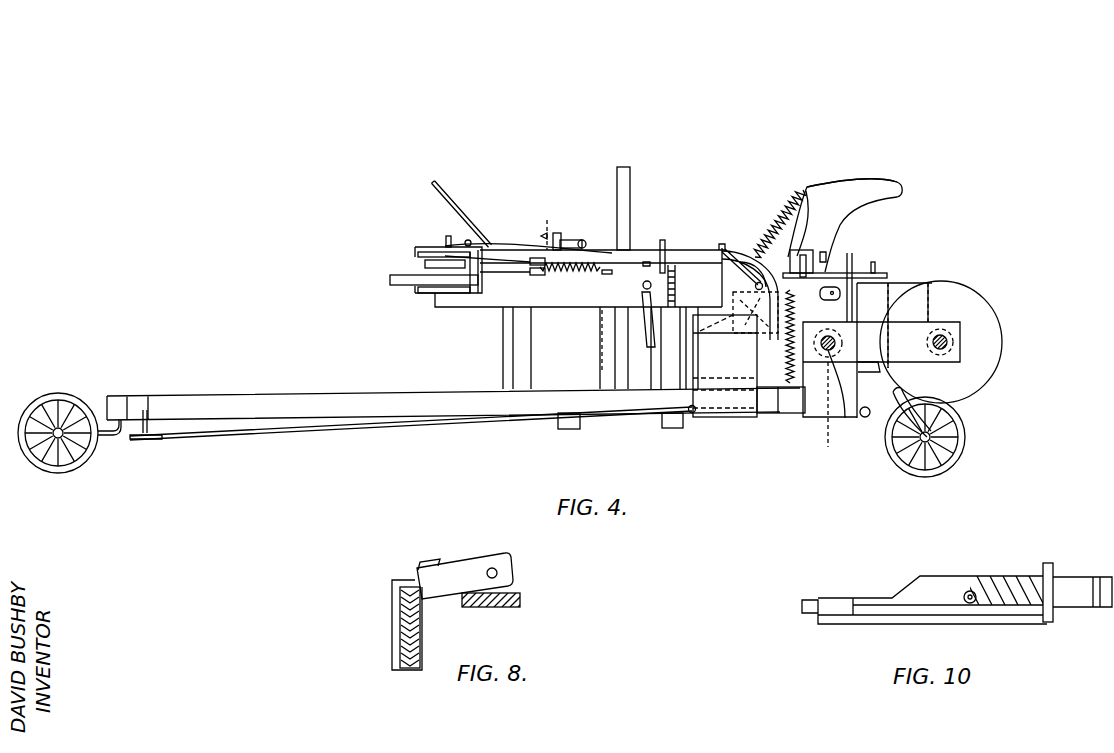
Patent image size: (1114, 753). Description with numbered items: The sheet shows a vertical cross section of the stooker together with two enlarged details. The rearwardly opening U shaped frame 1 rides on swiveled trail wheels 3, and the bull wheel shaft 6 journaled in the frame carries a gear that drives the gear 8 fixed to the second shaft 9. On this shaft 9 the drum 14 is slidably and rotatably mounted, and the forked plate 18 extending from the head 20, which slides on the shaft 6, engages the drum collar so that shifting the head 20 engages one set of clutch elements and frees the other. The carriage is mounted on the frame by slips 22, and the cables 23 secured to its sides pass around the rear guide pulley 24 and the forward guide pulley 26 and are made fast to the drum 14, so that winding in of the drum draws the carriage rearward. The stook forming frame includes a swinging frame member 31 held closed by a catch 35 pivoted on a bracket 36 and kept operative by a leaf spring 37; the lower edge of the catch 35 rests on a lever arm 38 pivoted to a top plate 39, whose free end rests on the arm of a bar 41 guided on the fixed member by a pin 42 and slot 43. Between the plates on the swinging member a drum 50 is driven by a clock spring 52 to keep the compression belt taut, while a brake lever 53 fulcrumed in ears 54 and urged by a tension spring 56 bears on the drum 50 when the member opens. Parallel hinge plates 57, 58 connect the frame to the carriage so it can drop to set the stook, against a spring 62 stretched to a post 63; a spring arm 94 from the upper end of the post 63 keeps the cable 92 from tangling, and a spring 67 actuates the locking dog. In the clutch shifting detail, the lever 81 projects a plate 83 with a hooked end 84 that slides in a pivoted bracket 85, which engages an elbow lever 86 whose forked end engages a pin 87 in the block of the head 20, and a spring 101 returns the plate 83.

In FIG. 4, the U shaped frame 1 is at (217, 395).
In FIG. 4, the swiveled trail wheel 3 is at (62, 393).
In FIG. 4, the shaft 6 is at (845, 419).
In FIG. 4, the gear 8 is at (547, 258).
In FIG. 4, the second shaft 9 is at (947, 342).
In FIG. 4, the drum 14 is at (985, 291).
In FIG. 4, the forked plate 18 is at (918, 281).
In FIG. 4, the head 20 is at (881, 396).
In FIG. 4, the slip 22 is at (713, 418).
In FIG. 4, the cord or cable 23 is at (263, 438).
In FIG. 4, the guide pulley or roller 24 is at (145, 441).
In FIG. 4, the forward guide pulley or roller 26 is at (865, 418).
In FIG. 8, the swinging frame member 31 is at (415, 671).
In FIG. 8, the catch 35 is at (467, 561).
In FIG. 4, the bracket 36 is at (611, 253).
In FIG. 8, the bracket 36 is at (392, 588).
In FIG. 4, the leaf spring 37 is at (572, 229).
In FIG. 8, the leaf spring 37 is at (426, 562).
In FIG. 4, the lever arm 38 is at (495, 243).
In FIG. 8, the lever arm 38 is at (521, 600).
In FIG. 4, the top plate or bracket 39 is at (431, 243).
In FIG. 4, the bar 41 is at (648, 351).
In FIG. 4, the pin 42 is at (628, 311).
In FIG. 4, the slot 43 is at (642, 331).
In FIG. 4, the drum 50 is at (415, 253).
In FIG. 4, the clock spring 52 is at (390, 280).
In FIG. 4, the brake lever 53 is at (503, 268).
In FIG. 4, the ears 54 is at (531, 274).
In FIG. 4, the tension spring 56 is at (557, 271).
In FIG. 4, the upper hinge plate 57 is at (608, 274).
In FIG. 4, the hinge plate 58 is at (693, 336).
In FIG. 4, the spring 62 is at (790, 208).
In FIG. 4, the post 63 is at (820, 211).
In FIG. 4, the spring 67 is at (803, 375).
In FIG. 10, the lever 81 is at (967, 603).
In FIG. 10, the plate 83 is at (1058, 573).
In FIG. 10, the hooked outer end 84 is at (1100, 577).
In FIG. 4, the bracket 85 is at (813, 249).
In FIG. 10, the bracket 85 is at (1010, 626).
In FIG. 4, the elbow lever 86 is at (853, 273).
In FIG. 4, the pin 87 is at (874, 265).
In FIG. 4, the cable 92 is at (898, 186).
In FIG. 4, the spring arm 94 is at (828, 186).
In FIG. 10, the spring 101 is at (983, 576).